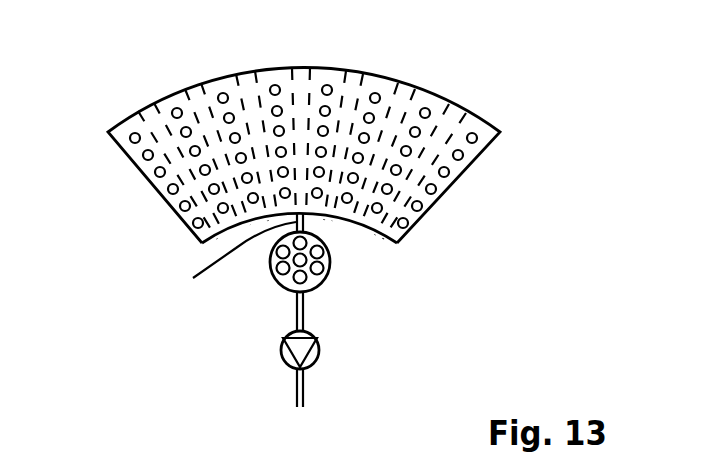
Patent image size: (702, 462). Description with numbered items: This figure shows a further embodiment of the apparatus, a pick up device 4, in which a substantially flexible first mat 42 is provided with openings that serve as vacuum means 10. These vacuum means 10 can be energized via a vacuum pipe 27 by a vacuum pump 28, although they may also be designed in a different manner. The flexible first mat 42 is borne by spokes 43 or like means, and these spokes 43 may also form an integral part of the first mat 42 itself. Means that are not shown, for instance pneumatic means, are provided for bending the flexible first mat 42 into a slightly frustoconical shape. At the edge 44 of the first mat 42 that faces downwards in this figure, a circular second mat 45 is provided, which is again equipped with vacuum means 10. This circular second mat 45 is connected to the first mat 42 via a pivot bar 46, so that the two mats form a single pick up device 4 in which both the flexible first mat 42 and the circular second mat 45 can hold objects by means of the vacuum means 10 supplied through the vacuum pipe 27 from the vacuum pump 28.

The pick up device 4 is at (145, 235).
The vacuum means 10 is at (148, 157).
The vacuum pipe 27 is at (281, 348).
The vacuum pump 28 is at (297, 390).
The first mat 42 is at (110, 130).
The spokes 43 is at (196, 98).
The edge 44 is at (367, 233).
The second mat 45 is at (272, 279).
The pivot bar 46 is at (228, 262).